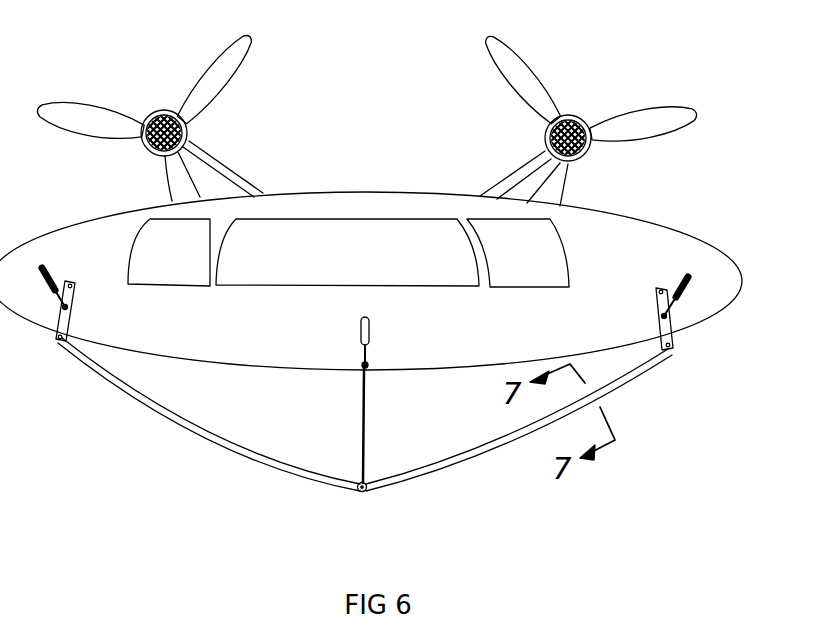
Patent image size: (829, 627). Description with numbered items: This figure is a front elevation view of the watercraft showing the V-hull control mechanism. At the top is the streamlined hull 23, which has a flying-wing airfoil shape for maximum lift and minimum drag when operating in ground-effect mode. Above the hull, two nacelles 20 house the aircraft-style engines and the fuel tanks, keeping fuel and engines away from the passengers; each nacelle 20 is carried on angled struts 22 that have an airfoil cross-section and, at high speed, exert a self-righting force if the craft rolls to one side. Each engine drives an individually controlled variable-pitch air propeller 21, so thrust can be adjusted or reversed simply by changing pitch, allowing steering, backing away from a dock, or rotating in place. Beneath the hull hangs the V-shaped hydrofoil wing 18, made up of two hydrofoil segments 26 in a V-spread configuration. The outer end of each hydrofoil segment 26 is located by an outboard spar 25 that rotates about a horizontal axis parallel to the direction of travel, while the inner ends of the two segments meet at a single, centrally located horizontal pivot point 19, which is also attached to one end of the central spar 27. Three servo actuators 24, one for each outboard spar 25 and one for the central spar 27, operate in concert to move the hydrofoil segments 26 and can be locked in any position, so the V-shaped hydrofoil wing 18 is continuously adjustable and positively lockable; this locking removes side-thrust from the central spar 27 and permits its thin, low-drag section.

The V-shaped hydrofoil wing 18 is at (112, 439).
The horizontal pivot point 19 is at (367, 492).
The nacelle 20 is at (155, 110).
The variable-pitch air propeller 21 is at (207, 82).
The angled strut 22 is at (227, 173).
The hull 23 is at (657, 246).
The servo actuator 24 is at (690, 289).
The outboard spar 25 is at (672, 338).
The hydrofoil segment 26 is at (452, 460).
The central spar 27 is at (363, 425).